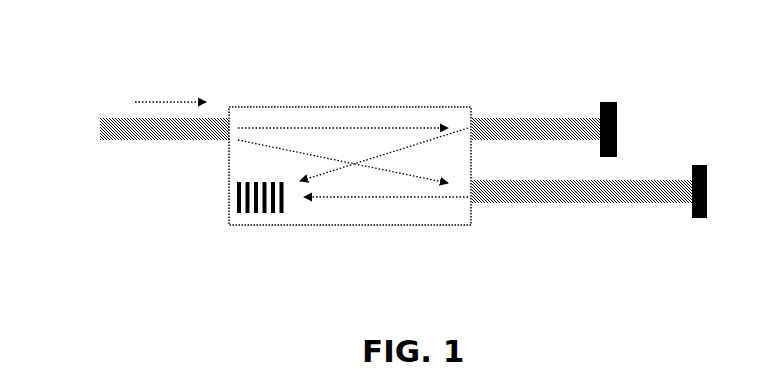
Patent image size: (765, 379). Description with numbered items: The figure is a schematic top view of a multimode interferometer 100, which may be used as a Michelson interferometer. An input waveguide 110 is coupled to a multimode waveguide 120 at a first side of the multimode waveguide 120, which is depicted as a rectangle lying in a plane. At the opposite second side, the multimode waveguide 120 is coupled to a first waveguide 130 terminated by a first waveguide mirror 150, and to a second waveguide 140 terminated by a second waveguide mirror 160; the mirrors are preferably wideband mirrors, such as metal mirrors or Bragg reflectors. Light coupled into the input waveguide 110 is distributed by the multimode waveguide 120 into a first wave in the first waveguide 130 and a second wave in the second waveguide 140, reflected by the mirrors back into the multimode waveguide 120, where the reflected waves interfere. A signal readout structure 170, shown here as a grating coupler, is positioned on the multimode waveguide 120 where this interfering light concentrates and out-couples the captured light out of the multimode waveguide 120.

The multimode interferometer 100 is at (113, 65).
The input waveguide 110 is at (140, 125).
The multimode waveguide 120 is at (294, 105).
The first waveguide 130 is at (565, 195).
The second waveguide 140 is at (525, 120).
The first waveguide mirror 150 is at (705, 217).
The second waveguide mirror 160 is at (608, 102).
The signal readout structure 170 is at (253, 197).